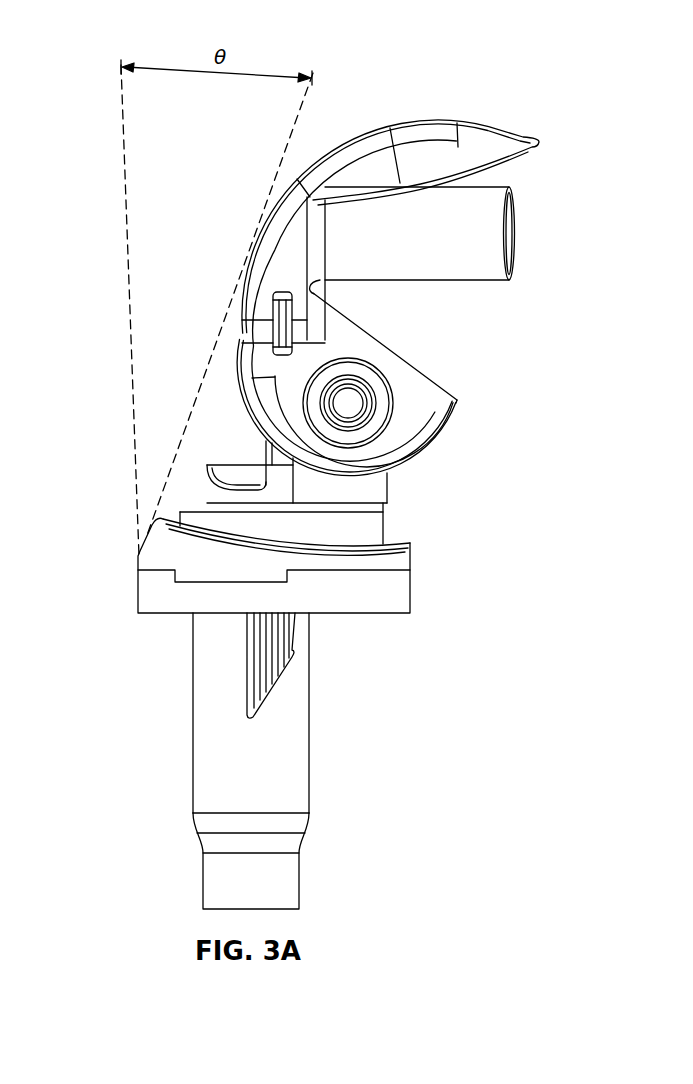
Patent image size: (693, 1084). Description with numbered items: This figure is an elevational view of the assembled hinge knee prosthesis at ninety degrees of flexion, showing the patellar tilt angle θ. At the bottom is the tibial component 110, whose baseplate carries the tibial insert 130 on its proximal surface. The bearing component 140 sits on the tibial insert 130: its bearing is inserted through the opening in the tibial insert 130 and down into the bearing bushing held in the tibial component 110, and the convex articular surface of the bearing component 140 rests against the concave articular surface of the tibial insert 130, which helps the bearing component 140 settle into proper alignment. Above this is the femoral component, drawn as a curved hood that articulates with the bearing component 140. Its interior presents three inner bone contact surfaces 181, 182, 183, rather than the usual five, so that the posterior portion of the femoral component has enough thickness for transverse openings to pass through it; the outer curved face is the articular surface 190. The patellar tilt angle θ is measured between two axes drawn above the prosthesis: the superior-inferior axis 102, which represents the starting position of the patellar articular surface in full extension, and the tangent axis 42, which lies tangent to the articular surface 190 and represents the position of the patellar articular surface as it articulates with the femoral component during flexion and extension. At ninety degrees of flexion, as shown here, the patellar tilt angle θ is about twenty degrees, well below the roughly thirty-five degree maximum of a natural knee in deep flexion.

The tangent axis 42 is at (293, 130).
The superior-inferior axis 102 is at (130, 272).
The tibial component 110 is at (362, 788).
The tibial insert 130 is at (420, 552).
The bearing component 140 is at (400, 503).
The inner bone contact surface 181 is at (413, 378).
The inner bone contact surface 182 is at (314, 296).
The inner bone contact surface 183 is at (503, 158).
The articular surface 190 is at (412, 86).